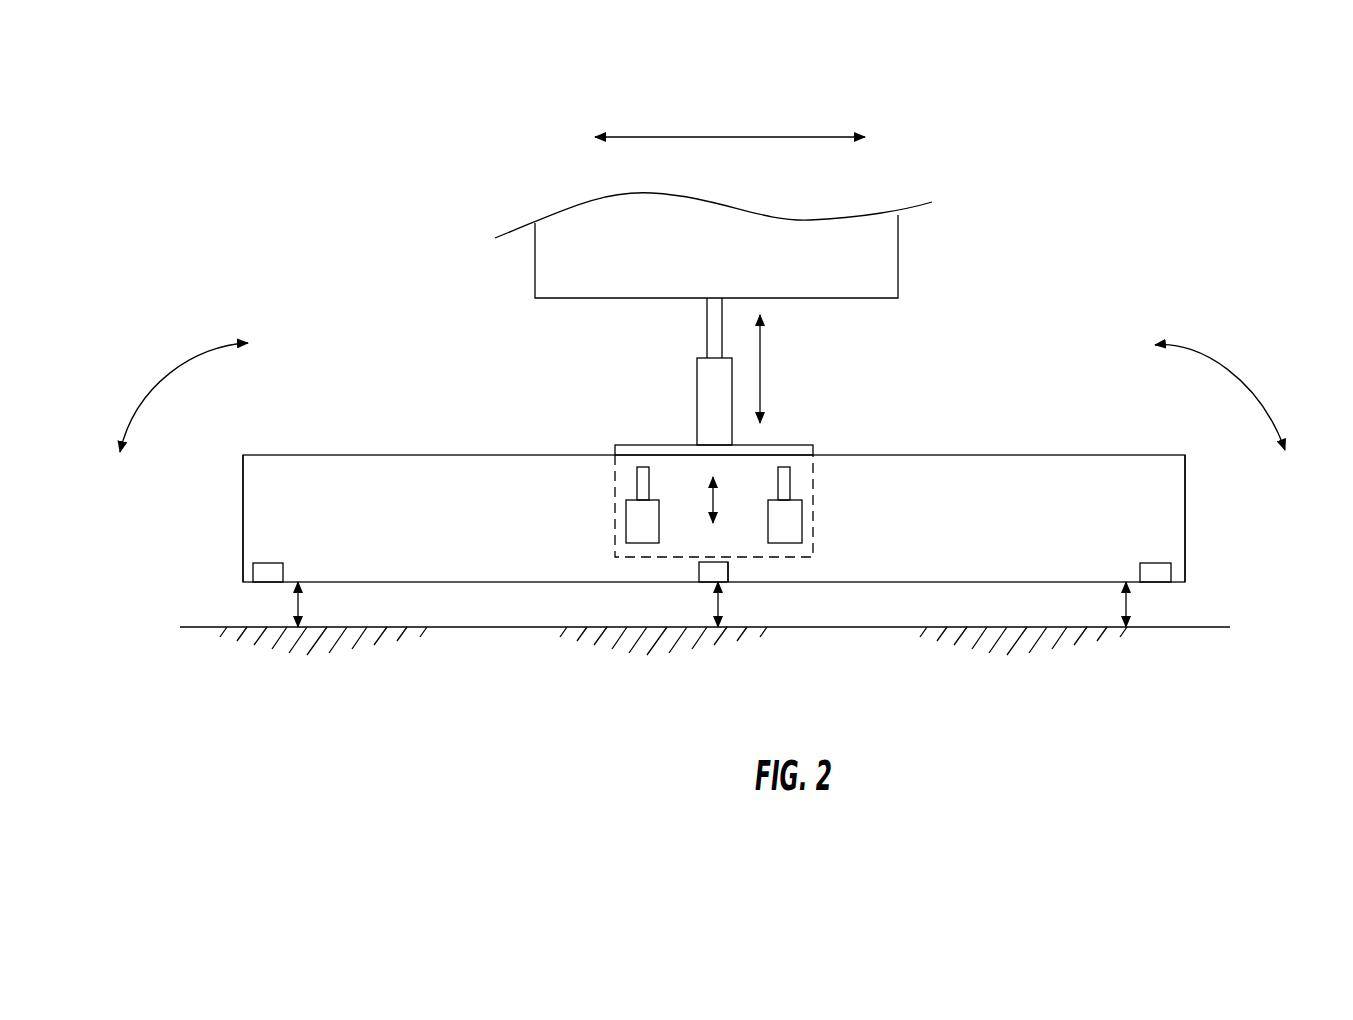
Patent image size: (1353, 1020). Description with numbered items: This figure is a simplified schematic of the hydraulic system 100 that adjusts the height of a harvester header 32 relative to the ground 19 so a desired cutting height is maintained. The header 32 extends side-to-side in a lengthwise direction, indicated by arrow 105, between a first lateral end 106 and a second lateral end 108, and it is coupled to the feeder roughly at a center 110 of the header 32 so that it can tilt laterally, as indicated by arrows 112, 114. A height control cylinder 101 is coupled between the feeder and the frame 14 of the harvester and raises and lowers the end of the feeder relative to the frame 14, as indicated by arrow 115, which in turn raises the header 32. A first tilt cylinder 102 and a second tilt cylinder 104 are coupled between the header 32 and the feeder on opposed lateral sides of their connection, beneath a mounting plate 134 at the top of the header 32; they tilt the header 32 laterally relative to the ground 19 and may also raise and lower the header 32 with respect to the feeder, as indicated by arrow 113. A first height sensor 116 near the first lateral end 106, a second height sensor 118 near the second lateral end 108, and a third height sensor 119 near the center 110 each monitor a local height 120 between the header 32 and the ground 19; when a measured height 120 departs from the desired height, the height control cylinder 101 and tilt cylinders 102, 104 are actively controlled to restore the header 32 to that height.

The frame 14 is at (535, 240).
The arrow indicating lengthwise direction 105 is at (743, 137).
The height control cylinder 101 is at (697, 392).
The arrow indicating raising and lowering of feeder 115 is at (760, 360).
The mounting plate 134 is at (793, 445).
The header 32 is at (450, 455).
The hydraulic system 100 is at (1048, 347).
The arrow indicating lateral tilt 112 is at (165, 367).
The arrow indicating lateral tilt 114 is at (1238, 368).
The first lateral end 106 is at (243, 493).
The second lateral end 108 is at (1185, 483).
The first tilt cylinder 102 is at (626, 518).
The second tilt cylinder 104 is at (802, 518).
The arrow indicating raising and lowering of header 113 is at (712, 493).
The first height sensor 116 is at (267, 563).
The second height sensor 118 is at (1157, 563).
The center 110 is at (698, 583).
The third height sensor 119 is at (730, 568).
The ground 19 is at (230, 627).
The local height 120 is at (302, 603).